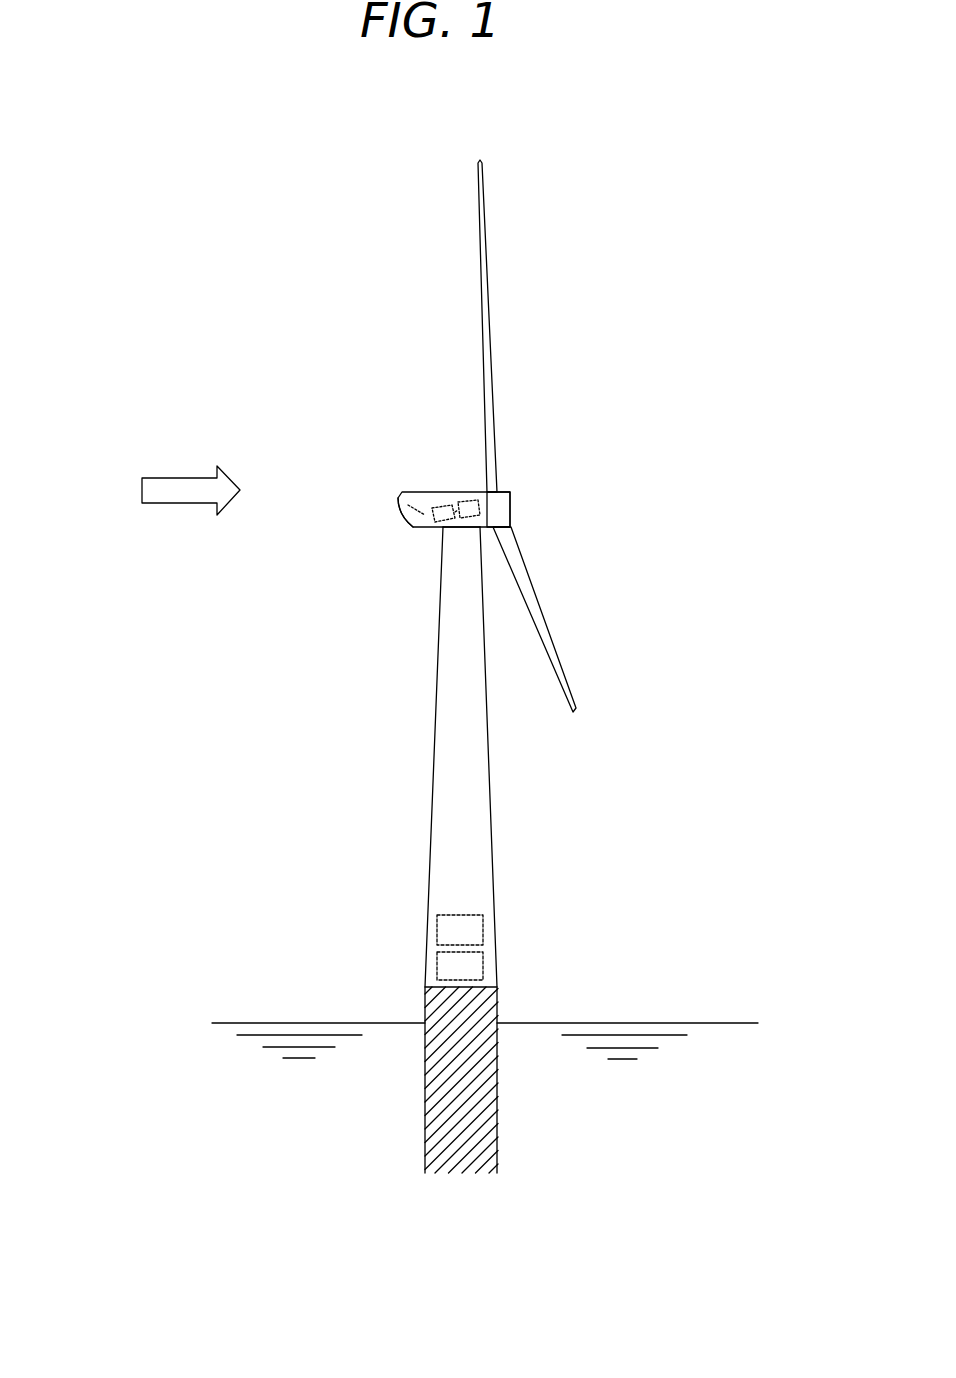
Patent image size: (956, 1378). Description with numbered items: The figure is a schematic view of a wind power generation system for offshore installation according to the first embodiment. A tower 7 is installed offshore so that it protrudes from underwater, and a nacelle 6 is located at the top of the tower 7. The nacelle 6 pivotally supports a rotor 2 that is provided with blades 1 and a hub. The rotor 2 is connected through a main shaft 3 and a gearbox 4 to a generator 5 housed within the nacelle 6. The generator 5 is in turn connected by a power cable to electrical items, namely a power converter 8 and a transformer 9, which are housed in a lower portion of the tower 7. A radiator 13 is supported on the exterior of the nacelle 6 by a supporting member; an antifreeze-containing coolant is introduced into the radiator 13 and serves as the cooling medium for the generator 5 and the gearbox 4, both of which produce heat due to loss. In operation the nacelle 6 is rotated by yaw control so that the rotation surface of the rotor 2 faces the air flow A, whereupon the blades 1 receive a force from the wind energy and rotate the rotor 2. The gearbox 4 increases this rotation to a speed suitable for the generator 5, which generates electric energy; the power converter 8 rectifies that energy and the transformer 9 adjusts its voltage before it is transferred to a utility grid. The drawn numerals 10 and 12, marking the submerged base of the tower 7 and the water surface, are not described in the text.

The blades 1 is at (487, 265).
The rotor 2 is at (510, 491).
The main shaft 3 is at (477, 492).
The gearbox 4 is at (458, 490).
The generator 5 is at (417, 493).
The nacelle 6 is at (422, 527).
The tower 7 is at (437, 650).
The power converter 8 is at (483, 935).
The transformer 9 is at (483, 970).
The foundation 10 is at (498, 1123).
The water surface 12 is at (622, 1023).
The radiator 13 is at (410, 515).
The air flow A is at (190, 503).